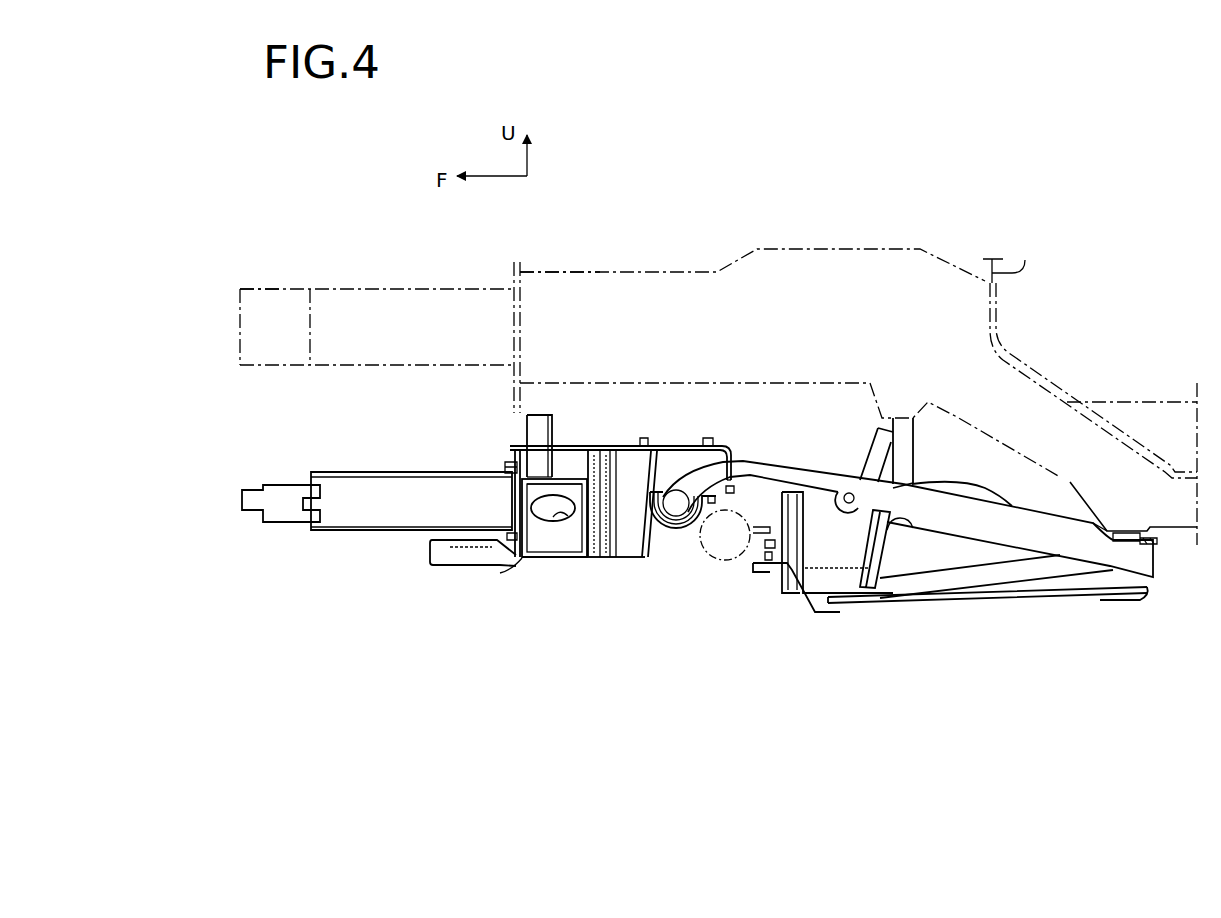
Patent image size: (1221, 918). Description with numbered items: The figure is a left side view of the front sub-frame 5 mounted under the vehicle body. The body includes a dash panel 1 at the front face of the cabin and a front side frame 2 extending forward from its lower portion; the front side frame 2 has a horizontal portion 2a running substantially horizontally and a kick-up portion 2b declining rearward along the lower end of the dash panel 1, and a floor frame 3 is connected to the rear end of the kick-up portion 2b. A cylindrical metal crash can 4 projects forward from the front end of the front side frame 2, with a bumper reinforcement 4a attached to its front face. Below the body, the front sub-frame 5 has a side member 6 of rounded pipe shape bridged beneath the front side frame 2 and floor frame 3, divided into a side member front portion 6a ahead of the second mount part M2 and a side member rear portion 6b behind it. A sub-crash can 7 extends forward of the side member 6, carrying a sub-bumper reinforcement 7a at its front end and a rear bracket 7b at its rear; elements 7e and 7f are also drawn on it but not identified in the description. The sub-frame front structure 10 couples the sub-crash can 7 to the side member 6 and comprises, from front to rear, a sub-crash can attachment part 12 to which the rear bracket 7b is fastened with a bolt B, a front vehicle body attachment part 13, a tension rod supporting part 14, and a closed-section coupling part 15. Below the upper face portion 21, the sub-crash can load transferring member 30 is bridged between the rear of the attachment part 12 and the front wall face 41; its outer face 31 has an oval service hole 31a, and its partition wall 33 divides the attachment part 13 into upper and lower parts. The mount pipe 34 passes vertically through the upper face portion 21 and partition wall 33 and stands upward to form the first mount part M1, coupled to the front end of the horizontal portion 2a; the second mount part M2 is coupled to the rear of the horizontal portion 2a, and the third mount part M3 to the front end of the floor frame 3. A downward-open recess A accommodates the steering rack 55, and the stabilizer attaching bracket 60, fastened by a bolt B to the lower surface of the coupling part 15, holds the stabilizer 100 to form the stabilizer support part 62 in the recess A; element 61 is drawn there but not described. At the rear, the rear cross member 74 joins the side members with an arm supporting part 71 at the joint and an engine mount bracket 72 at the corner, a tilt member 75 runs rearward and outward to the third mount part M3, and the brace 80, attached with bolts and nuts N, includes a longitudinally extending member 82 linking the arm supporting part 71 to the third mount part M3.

The dash panel 1 is at (1025, 260).
The front side frame 2 is at (810, 247).
The horizontal portion 2a is at (615, 262).
The kick-up portion 2b is at (1055, 398).
The floor frame 3 is at (1184, 547).
The crash can 4 is at (377, 286).
The bumper reinforcement 4a is at (282, 272).
The front sub-frame 5 is at (431, 605).
The side member 6 is at (1024, 504).
The side member front portion 6a is at (838, 470).
The side member rear portion 6b is at (1065, 522).
The sub-crash can 7 is at (389, 471).
The sub-bumper reinforcement 7a is at (283, 484).
The rear bracket 7b is at (510, 493).
The cylinder lower wall 7e is at (343, 532).
The cylinder upper wall 7f is at (341, 471).
The sub-frame front structure 10 is at (568, 624).
The sub-crash can attachment part 12 is at (492, 562).
The front vehicle body attachment part 13 is at (528, 577).
The tension rod supporting part 14 is at (602, 583).
The closed-section coupling part 15 is at (689, 462).
The upper face portion 21 is at (628, 448).
The sub-crash can load transferring member 30 is at (552, 578).
The outer face 31 is at (577, 560).
The service hole 31a is at (556, 518).
The partition wall 33 is at (557, 480).
The mount pipe 34 is at (524, 420).
The front wall face 41 is at (627, 560).
The steering rack 55 is at (735, 560).
The stabilizer attaching bracket 60 is at (666, 538).
The pin 61 is at (740, 482).
The stabilizer support part 62 is at (682, 531).
The arm supporting part 71 is at (820, 598).
The engine mount bracket 72 is at (962, 482).
The rear cross member 74 is at (888, 582).
The tilt member 75 is at (1058, 581).
The brace 80 is at (978, 603).
The longitudinally extending member 82 is at (1095, 598).
The stabilizer 100 is at (800, 465).
The recess A is at (700, 564).
The bolt B is at (507, 458).
The nut N is at (648, 438).
The first mount part M1 is at (556, 422).
The second mount part M2 is at (916, 462).
The third mount part M3 is at (1132, 530).